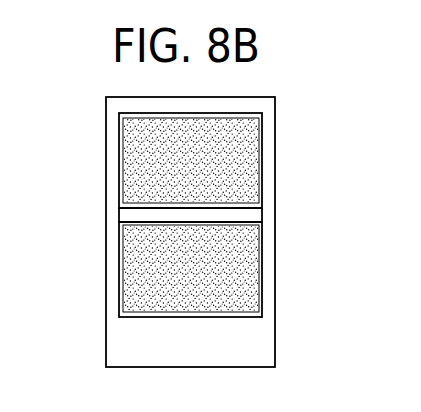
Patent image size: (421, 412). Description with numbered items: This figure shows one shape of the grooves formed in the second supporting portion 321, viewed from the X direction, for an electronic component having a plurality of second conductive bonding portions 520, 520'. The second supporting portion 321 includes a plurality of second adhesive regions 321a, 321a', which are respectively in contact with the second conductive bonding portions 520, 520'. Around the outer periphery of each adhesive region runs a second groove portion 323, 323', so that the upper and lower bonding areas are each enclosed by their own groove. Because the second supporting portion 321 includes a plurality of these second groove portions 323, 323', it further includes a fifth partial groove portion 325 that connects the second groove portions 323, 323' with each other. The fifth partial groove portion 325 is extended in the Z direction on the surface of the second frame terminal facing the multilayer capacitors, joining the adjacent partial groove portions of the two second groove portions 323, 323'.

The second supporting portion 321 is at (106, 330).
The second adhesive region 321a is at (231, 160).
The second adhesive region 321a' is at (235, 268).
The second groove portion 323 is at (155, 160).
The second groove portion 323' is at (152, 269).
The fifth partial groove portion 325 is at (119, 215).
The second conductive bonding portion 520 is at (222, 158).
The second conductive bonding portion 520' is at (224, 268).